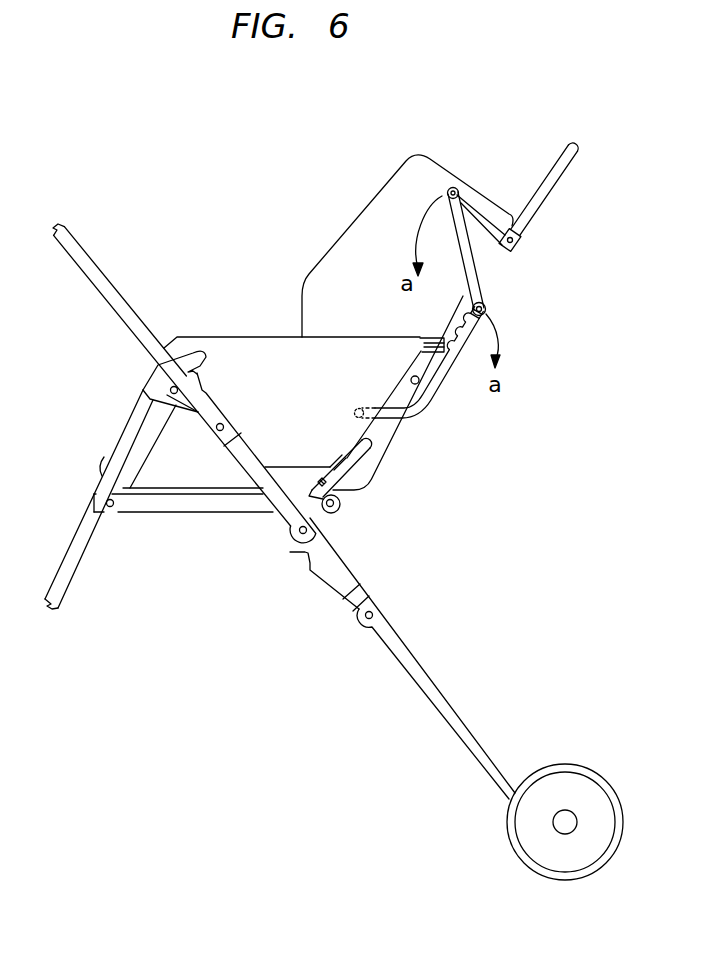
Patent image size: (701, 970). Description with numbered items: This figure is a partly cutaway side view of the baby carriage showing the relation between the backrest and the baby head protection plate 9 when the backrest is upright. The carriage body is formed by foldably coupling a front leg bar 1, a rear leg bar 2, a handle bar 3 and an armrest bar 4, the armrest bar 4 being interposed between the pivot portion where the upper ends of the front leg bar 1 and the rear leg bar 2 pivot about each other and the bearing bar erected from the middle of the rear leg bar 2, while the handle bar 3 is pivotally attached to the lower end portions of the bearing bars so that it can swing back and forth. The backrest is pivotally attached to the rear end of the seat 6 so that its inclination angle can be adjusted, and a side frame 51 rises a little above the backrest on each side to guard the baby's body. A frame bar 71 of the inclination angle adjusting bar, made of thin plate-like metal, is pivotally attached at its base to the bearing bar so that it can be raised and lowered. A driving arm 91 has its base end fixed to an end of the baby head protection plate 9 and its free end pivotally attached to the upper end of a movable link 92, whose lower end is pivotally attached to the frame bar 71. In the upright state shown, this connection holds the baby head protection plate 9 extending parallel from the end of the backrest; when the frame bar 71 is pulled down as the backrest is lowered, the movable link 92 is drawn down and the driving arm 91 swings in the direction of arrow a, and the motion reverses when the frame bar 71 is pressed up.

The front leg bar 1 is at (70, 575).
The rear leg bar 2 is at (462, 729).
The handle bar 3 is at (87, 253).
The armrest bar 4 is at (290, 398).
The seat 6 is at (181, 513).
The baby head protection plate 9 is at (547, 190).
The side frame 51 is at (362, 216).
The frame bar 71 is at (432, 407).
The driving arm 91 is at (476, 211).
The movable link 92 is at (470, 261).